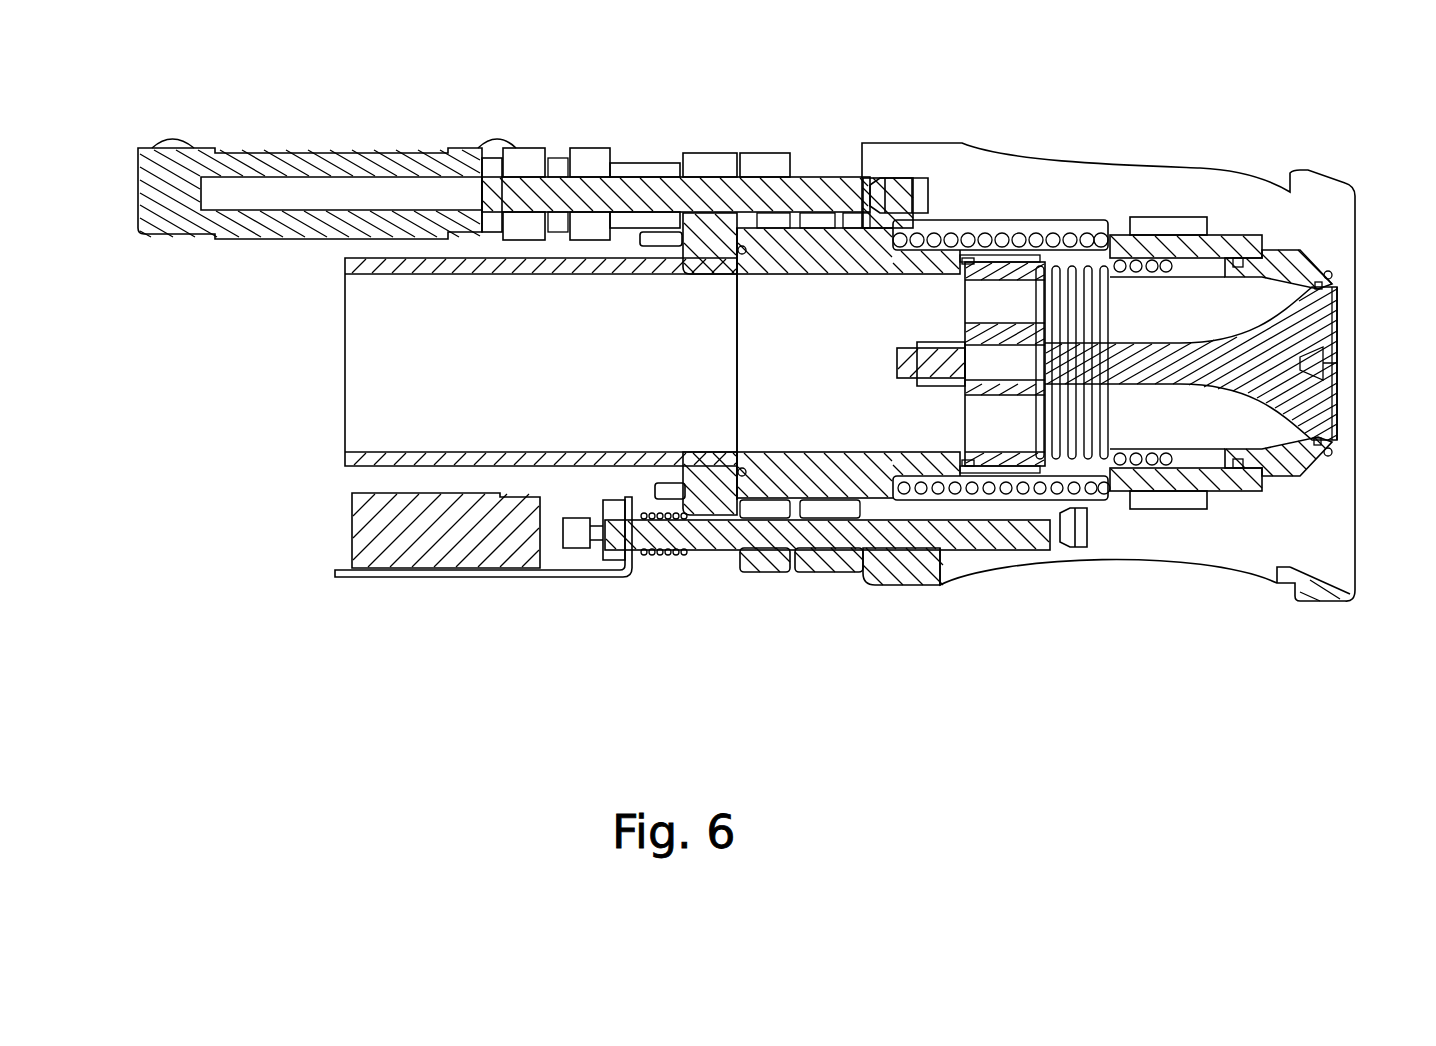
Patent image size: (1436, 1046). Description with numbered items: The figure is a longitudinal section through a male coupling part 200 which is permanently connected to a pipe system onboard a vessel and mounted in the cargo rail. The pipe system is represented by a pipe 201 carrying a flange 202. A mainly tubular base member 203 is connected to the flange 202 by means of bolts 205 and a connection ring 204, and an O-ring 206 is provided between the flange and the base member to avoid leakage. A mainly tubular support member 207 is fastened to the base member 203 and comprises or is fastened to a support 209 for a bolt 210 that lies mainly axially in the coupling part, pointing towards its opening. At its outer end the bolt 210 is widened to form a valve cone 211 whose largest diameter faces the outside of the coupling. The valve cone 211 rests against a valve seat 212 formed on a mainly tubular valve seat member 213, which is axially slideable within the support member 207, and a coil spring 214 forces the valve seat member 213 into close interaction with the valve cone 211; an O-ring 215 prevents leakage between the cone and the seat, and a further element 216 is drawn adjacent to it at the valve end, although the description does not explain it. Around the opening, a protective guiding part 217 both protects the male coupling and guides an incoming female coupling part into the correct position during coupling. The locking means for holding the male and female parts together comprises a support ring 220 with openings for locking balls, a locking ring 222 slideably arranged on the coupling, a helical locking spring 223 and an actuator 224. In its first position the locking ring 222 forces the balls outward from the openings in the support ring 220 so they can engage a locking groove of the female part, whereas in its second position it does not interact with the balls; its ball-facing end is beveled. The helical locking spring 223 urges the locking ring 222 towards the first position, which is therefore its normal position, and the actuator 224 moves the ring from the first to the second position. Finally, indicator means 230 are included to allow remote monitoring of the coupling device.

The male coupling part 200 is at (440, 655).
The pipe 201 is at (360, 447).
The flange 202 is at (706, 240).
The base member 203 is at (862, 263).
The connection ring 204 is at (762, 557).
The bolts 205 is at (665, 490).
The O-ring 206 is at (746, 468).
The support member 207 is at (998, 265).
The support 209 is at (973, 388).
The bolt 210 is at (1195, 381).
The valve cone 211 is at (1324, 284).
The valve seat 212 is at (1312, 270).
The valve seat member 213 is at (1255, 470).
The coil spring 214 is at (1077, 472).
The O-ring 215 is at (1322, 440).
The o-ring 216 is at (1331, 456).
The protective guiding part 217 is at (1326, 556).
The support ring 220 is at (1140, 505).
The locking ring 222 is at (1117, 225).
The helical locking spring 223 is at (975, 240).
The actuator 224 is at (590, 128).
The indicator means 230 is at (520, 535).